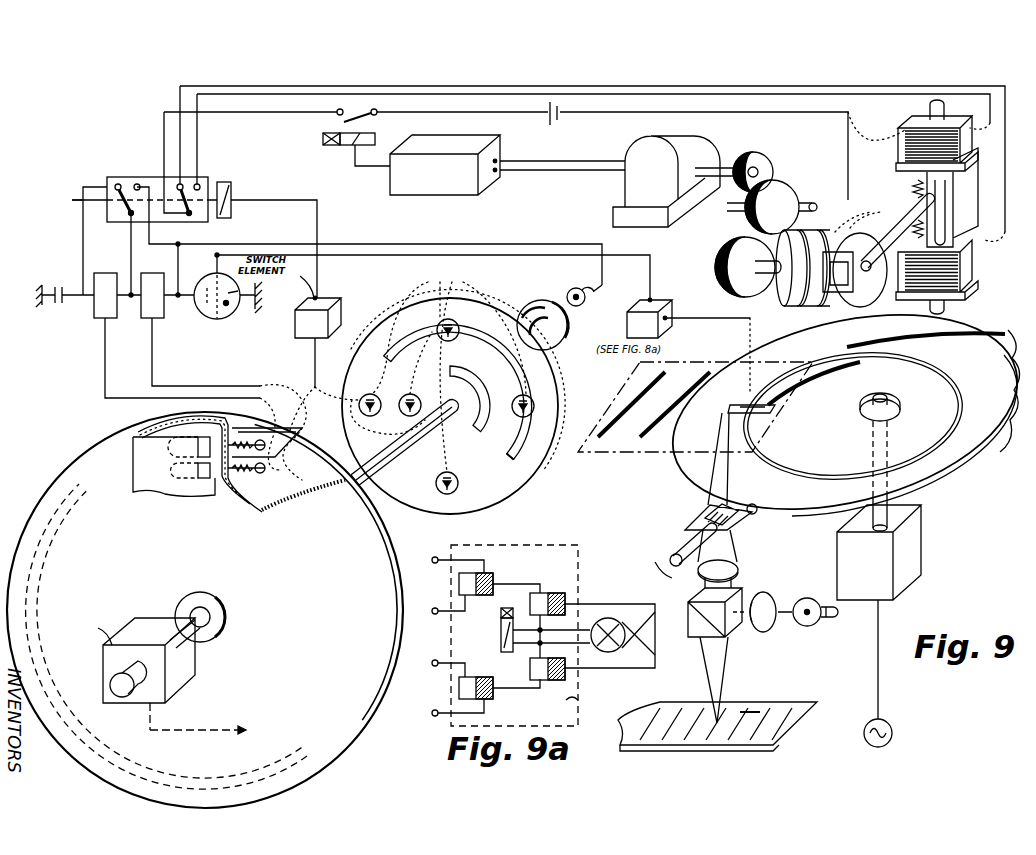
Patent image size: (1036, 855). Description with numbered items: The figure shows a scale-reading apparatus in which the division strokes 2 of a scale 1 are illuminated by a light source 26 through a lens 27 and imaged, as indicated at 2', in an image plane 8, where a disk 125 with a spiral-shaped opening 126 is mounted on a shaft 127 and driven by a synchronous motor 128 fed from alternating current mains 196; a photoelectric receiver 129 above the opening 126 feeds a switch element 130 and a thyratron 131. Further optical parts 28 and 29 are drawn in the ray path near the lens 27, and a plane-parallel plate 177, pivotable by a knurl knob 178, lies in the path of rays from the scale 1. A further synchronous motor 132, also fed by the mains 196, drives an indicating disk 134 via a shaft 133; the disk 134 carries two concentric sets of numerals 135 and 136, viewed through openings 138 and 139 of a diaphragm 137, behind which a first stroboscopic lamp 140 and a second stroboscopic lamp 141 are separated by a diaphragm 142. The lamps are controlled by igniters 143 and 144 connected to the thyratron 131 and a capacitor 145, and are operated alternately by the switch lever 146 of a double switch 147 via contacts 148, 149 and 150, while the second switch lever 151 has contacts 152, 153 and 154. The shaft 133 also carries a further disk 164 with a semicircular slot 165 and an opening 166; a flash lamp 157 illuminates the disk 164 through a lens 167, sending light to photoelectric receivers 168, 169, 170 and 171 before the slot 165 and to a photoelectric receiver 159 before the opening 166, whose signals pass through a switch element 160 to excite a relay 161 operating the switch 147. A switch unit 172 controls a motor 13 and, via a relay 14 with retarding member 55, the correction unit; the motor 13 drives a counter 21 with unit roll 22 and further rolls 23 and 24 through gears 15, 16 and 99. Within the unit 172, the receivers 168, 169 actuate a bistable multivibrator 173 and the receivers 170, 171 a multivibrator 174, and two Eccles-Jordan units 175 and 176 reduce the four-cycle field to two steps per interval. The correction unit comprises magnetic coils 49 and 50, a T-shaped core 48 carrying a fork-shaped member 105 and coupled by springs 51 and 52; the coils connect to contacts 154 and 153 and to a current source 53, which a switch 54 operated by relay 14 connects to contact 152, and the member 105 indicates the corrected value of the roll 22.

In FIG. 9, the scale 1 is at (727, 710).
In FIG. 9, the division strokes 2 is at (762, 690).
In FIG. 9, the image of division strokes 2' is at (654, 397).
In FIG. 9, the image plane 8 is at (695, 420).
In FIG. 9, the motor 13 is at (665, 180).
In FIG. 9A, the motor 13 is at (623, 618).
In FIG. 9, the relay 14 is at (352, 149).
In FIG. 9A, the relay 14 is at (529, 637).
In FIG. 9, the gear 15 is at (755, 157).
In FIG. 9, the gear 16 is at (772, 193).
In FIG. 9, the counter 21 is at (866, 277).
In FIG. 9, the unit roll 22 is at (835, 280).
In FIG. 9, the numeral 23 is at (801, 285).
In FIG. 9, the counter wheel 24 is at (774, 280).
In FIG. 9, the light source 26 is at (815, 633).
In FIG. 9, the lens 27 is at (771, 630).
In FIG. 9, the prism cube 28 is at (713, 655).
In FIG. 9, the lens 29 is at (742, 573).
In FIG. 9, the T-shaped core 48 is at (966, 207).
In FIG. 9, the magnetic coil 49 is at (949, 277).
In FIG. 9, the magnetic coil 50 is at (922, 135).
In FIG. 9, the spring 51 is at (898, 232).
In FIG. 9, the spring 52 is at (894, 207).
In FIG. 9, the current source 53 is at (552, 125).
In FIG. 9, the switch 54 is at (332, 119).
In FIG. 9, the retarding member 55 is at (312, 143).
In FIG. 9A, the retarding member 55 is at (490, 623).
In FIG. 9, the gear 99 is at (741, 267).
In FIG. 9, the fork-shaped member 105 is at (828, 255).
In FIG. 9, the disk 125 is at (844, 412).
In FIG. 9, the spiral-shaped opening 126 is at (852, 435).
In FIG. 9, the shaft 127 is at (910, 462).
In FIG. 9, the synchronous motor 128 is at (890, 552).
In FIG. 9, the photoelectric receiver 129 is at (783, 414).
In FIG. 9, the switch element 130 is at (632, 318).
In FIG. 9, the thyratron 131 is at (228, 305).
In FIG. 9, the synchronous motor 132 is at (151, 654).
In FIG. 9, the shaft 133 is at (297, 524).
In FIG. 9, the indicating disk 134 is at (205, 610).
In FIG. 9, the first set of numerals 135 is at (212, 659).
In FIG. 9, the second set of numerals 136 is at (218, 506).
In FIG. 9, the diaphragm 137 is at (158, 481).
In FIG. 9, the opening 138 is at (176, 482).
In FIG. 9, the opening 139 is at (192, 495).
In FIG. 9, the first stroboscopic lamp 140 is at (265, 429).
In FIG. 9, the second stroboscopic lamp 141 is at (201, 472).
In FIG. 9, the diaphragm 142 is at (287, 420).
In FIG. 9, the igniter 143 is at (166, 305).
In FIG. 9, the igniter 144 is at (91, 305).
In FIG. 9, the capacitor 145 is at (40, 311).
In FIG. 9, the switch lever 146 is at (60, 200).
In FIG. 9, the double switch 147 is at (133, 187).
In FIG. 9, the contact 148 is at (140, 168).
In FIG. 9, the contact 149 is at (111, 171).
In FIG. 9, the contact 150 is at (111, 230).
In FIG. 9, the second switch lever 151 is at (228, 222).
In FIG. 9, the contact 152 is at (202, 216).
In FIG. 9, the contact 153 is at (187, 171).
In FIG. 9, the contact 154 is at (180, 162).
In FIG. 9, the stroboscopic lamp 157 is at (569, 287).
In FIG. 9, the photoelectric receiver 159 is at (407, 374).
In FIG. 9, the switch element 160 is at (329, 302).
In FIG. 9, the relay 161 is at (245, 193).
In FIG. 9, the further disk 164 is at (459, 402).
In FIG. 9, the semicircular slot 165 is at (546, 462).
In FIG. 9, the opening 166 is at (473, 418).
In FIG. 9, the lens 167 is at (552, 337).
In FIG. 9, the photoelectric receiver 168 is at (491, 392).
In FIG. 9, the photoelectric receiver 169 is at (371, 358).
In FIG. 9, the photoelectric receiver 170 is at (477, 302).
In FIG. 9, the photoelectric receiver 171 is at (462, 390).
In FIG. 9, the switch unit 172 is at (444, 179).
In FIG. 9A, the switch unit 172 is at (593, 708).
In FIG. 9A, the bistable multivibrator 173 is at (496, 576).
In FIG. 9A, the multivibrator 174 is at (450, 688).
In FIG. 9A, the Eccles-Jordan unit 175 is at (571, 586).
In FIG. 9A, the Eccles-Jordan unit 176 is at (576, 678).
In FIG. 9, the plane-parallel plate 177 is at (702, 487).
In FIG. 9, the knurl knob 178 is at (675, 550).
In FIG. 9, the alternating current mains 196 is at (551, 674).